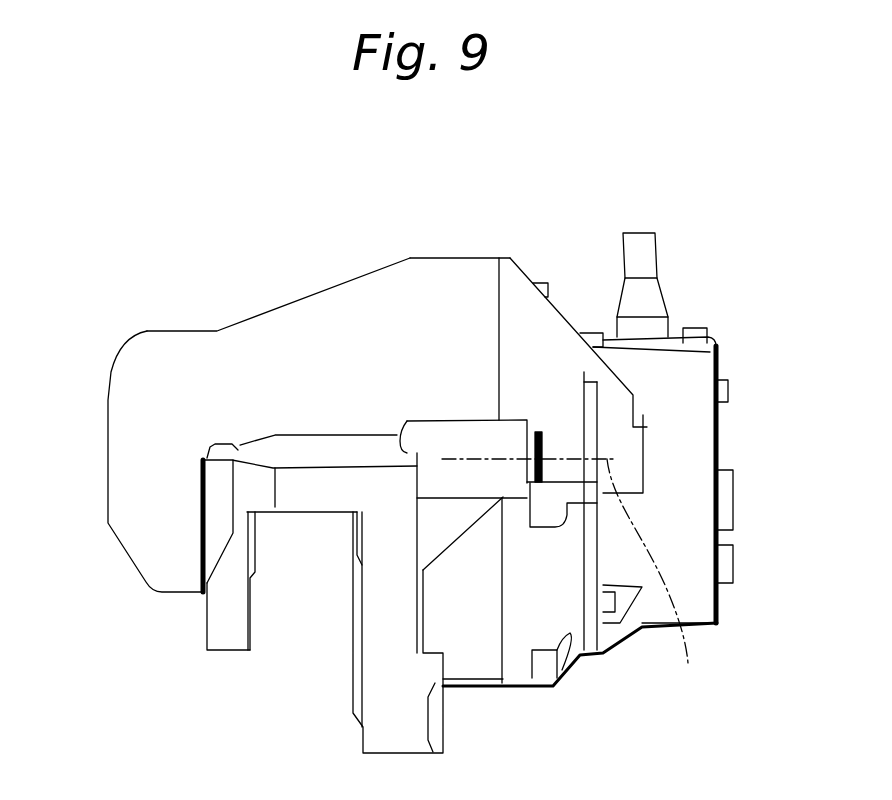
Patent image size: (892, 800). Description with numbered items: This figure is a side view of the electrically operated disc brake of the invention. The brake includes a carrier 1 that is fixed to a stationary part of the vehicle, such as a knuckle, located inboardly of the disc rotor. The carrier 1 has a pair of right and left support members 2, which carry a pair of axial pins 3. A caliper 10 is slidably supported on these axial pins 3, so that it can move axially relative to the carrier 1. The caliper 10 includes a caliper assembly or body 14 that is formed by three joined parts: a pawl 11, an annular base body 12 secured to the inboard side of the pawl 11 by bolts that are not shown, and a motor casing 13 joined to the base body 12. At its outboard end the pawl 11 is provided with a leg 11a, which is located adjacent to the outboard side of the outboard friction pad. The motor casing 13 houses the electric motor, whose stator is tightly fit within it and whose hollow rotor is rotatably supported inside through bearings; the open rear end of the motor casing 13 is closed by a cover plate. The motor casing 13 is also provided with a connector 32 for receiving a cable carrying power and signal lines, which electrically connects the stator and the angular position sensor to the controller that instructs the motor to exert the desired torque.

The carrier 1 is at (354, 686).
The support member 2 is at (433, 437).
The axial pin 3 is at (570, 538).
The caliper 10 is at (281, 300).
The pawl 11 is at (137, 362).
The leg 11a is at (140, 452).
The annular base body 12 is at (532, 333).
The motor casing 13 is at (683, 440).
The caliper assembly or body 14 is at (500, 258).
The connector 32 is at (640, 253).